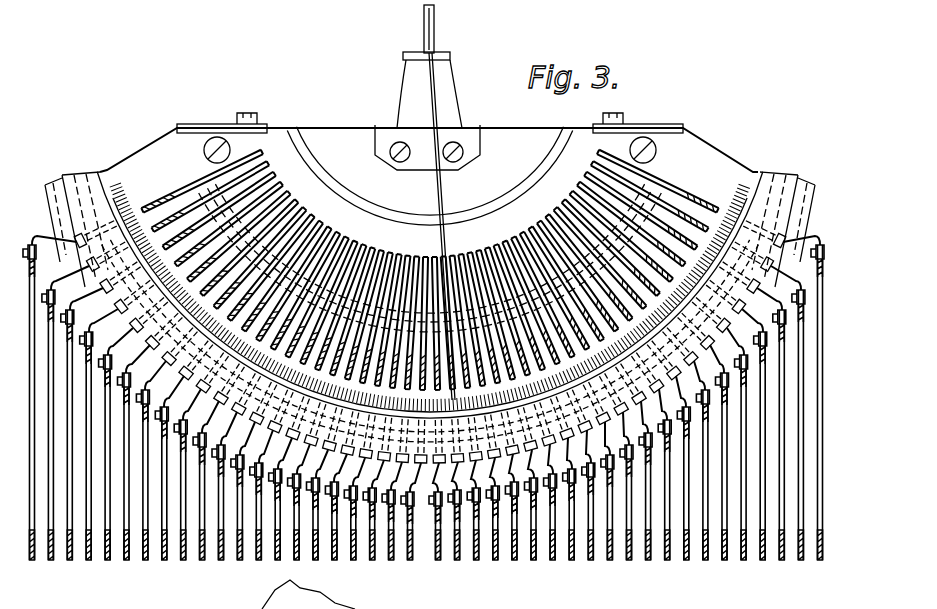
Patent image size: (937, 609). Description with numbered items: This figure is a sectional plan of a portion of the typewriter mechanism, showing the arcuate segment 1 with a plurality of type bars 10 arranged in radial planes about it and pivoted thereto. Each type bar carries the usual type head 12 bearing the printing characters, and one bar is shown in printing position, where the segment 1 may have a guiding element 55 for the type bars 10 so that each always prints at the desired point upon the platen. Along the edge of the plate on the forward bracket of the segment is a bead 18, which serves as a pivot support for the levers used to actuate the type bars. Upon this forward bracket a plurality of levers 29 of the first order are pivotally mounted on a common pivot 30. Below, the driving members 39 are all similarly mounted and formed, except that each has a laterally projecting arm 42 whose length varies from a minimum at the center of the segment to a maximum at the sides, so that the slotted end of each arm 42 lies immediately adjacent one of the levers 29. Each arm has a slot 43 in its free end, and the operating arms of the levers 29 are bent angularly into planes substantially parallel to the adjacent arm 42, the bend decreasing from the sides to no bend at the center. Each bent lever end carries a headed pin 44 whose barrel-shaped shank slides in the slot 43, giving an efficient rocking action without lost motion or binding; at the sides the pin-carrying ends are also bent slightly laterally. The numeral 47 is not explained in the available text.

The segment 1 is at (352, 124).
The type bars 10 is at (446, 197).
The type head 12 is at (435, 26).
The bead 18 is at (85, 166).
The levers of the first order 29 is at (52, 262).
The common pivot 30 is at (46, 183).
The driving members 39 is at (88, 562).
The arm 42 is at (146, 562).
The slot 43 is at (818, 245).
The headed pin 44 is at (92, 294).
The center rod 47 is at (410, 562).
The guiding element 55 is at (440, 77).